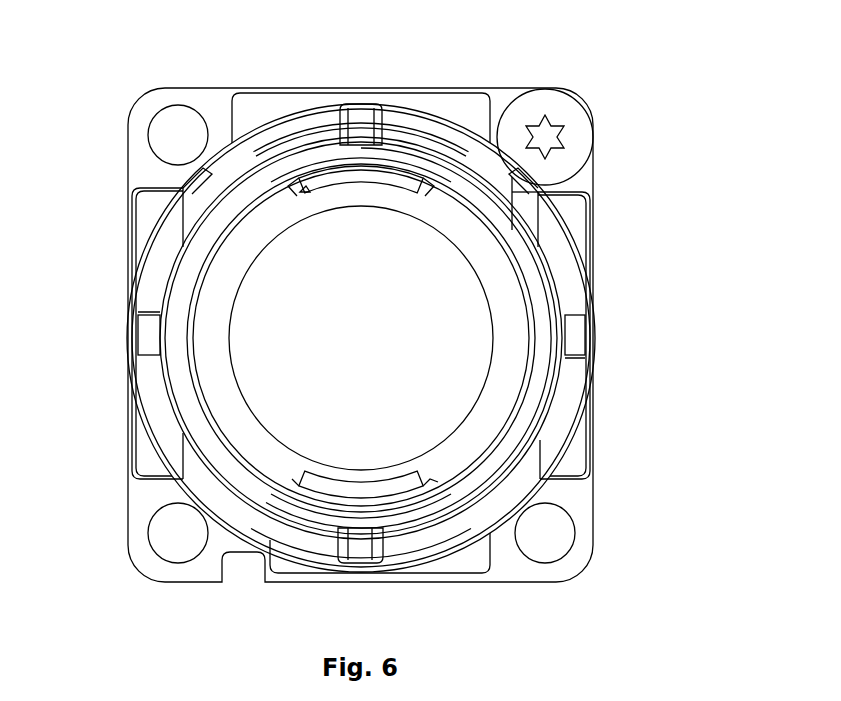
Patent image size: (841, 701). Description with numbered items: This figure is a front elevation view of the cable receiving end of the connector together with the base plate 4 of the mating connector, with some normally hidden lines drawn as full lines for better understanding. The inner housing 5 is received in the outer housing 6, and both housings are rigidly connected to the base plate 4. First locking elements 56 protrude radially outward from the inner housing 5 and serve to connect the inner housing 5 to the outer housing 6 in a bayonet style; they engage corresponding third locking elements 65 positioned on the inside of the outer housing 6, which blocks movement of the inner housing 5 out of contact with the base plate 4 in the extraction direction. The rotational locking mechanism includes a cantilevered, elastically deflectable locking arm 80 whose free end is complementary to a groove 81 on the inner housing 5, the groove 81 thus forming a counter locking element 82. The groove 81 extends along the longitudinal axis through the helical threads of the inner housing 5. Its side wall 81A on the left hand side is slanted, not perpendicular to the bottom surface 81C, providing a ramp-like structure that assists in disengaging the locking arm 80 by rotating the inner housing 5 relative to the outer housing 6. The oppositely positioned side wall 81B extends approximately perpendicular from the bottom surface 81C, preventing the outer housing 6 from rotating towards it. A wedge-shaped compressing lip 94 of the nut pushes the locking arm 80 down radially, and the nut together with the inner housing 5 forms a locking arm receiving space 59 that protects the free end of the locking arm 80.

The base plate 4 is at (205, 108).
The inner housing 5 is at (298, 185).
The outer housing 6 is at (326, 182).
The locking arm receiving space 59 is at (307, 180).
The locking arm 80 is at (364, 172).
The groove 81 is at (433, 176).
The counter locking element 82 is at (365, 484).
The side wall 81A is at (323, 186).
The side wall 81B is at (512, 228).
The bottom surface 81C is at (374, 192).
The compressing lip 94 is at (447, 190).
The first locking elements 56 is at (150, 335).
The third locking elements 65 is at (152, 313).